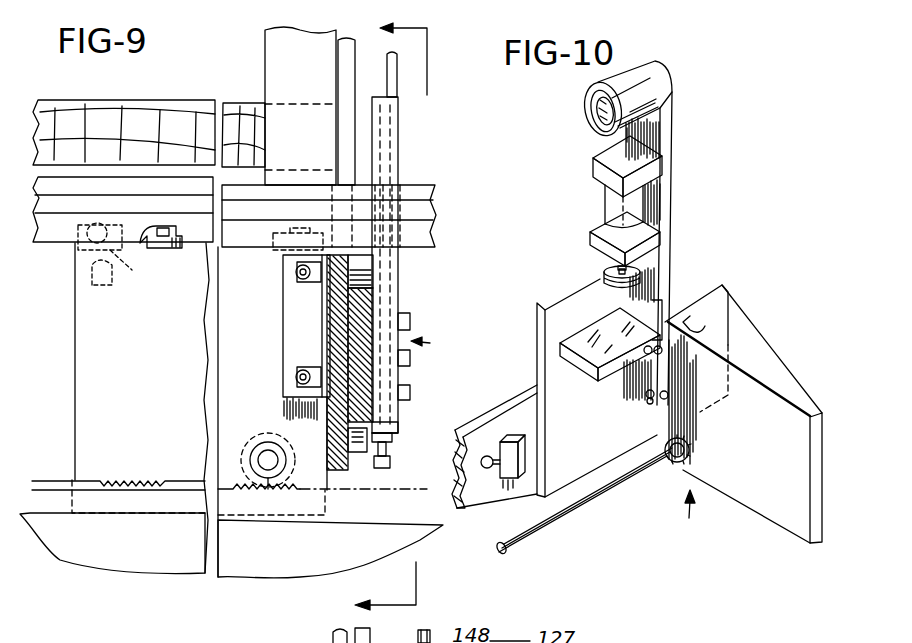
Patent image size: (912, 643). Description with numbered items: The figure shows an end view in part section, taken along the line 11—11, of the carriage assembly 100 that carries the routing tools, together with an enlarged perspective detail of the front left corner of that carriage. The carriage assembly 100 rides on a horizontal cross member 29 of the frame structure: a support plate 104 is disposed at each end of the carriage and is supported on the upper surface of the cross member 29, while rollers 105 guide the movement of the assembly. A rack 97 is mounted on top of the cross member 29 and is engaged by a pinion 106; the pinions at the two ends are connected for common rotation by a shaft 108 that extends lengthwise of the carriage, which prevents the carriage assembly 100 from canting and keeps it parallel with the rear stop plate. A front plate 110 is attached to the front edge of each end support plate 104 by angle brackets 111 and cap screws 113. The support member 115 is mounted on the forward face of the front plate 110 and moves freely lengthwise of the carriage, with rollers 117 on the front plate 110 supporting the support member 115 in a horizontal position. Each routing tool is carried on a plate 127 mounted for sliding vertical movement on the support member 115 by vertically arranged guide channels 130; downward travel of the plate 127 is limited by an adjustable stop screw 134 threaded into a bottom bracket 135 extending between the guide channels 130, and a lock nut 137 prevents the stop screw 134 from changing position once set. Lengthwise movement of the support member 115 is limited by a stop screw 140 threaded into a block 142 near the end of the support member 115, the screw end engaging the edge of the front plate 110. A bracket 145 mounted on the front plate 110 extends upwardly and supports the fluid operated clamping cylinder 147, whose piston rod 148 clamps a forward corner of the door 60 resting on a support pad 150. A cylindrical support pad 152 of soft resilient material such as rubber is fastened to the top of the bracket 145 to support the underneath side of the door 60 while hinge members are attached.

In FIG. 9, the section line 11— 11 is at (407, 316).
In FIG. 9, the cross member 29 is at (60, 545).
In FIG. 9, the door 60 is at (221, 103).
In FIG. 9, the rack 97 is at (55, 487).
In FIG. 9, the carriage assembly 100 is at (439, 348).
In FIG. 10, the carriage assembly 100 is at (696, 516).
In FIG. 9, the support plate 104 is at (75, 404).
In FIG. 10, the support plate 104 is at (768, 506).
In FIG. 9, the roller 105 is at (158, 252).
In FIG. 9, the pinion 106 is at (268, 492).
In FIG. 9, the shaft 108 is at (262, 452).
In FIG. 10, the shaft 108 is at (611, 496).
In FIG. 9, the front plate 110 is at (333, 347).
In FIG. 10, the front plate 110 is at (540, 333).
In FIG. 10, the angle bracket 111 is at (729, 300).
In FIG. 9, the cap screw 113 is at (298, 275).
In FIG. 10, the cap screw 113 is at (652, 402).
In FIG. 9, the support member 115 is at (352, 330).
In FIG. 10, the support member 115 is at (517, 412).
In FIG. 9, the roller 117 is at (396, 262).
In FIG. 9, the plate 127 is at (394, 81).
In FIG. 9, the guide channel 130 is at (400, 135).
In FIG. 9, the stop screw 134 is at (389, 467).
In FIG. 9, the bottom bracket 135 is at (398, 432).
In FIG. 9, the lock nut 137 is at (393, 438).
In FIG. 10, the stop screw 140 is at (486, 470).
In FIG. 10, the block 142 is at (508, 482).
In FIG. 9, the bracket 145 is at (268, 42).
In FIG. 10, the bracket 145 is at (669, 203).
In FIG. 10, the fluid operated clamping cylinder 147 is at (607, 200).
In FIG. 10, the piston rod 148 is at (610, 270).
In FIG. 10, the support pad 150 is at (601, 360).
In FIG. 10, the cylindrical support pad 152 is at (637, 72).